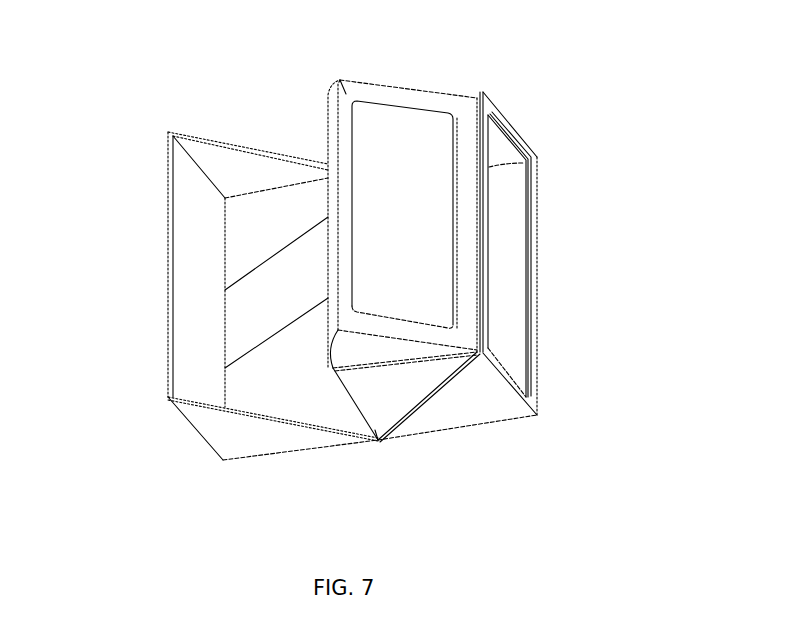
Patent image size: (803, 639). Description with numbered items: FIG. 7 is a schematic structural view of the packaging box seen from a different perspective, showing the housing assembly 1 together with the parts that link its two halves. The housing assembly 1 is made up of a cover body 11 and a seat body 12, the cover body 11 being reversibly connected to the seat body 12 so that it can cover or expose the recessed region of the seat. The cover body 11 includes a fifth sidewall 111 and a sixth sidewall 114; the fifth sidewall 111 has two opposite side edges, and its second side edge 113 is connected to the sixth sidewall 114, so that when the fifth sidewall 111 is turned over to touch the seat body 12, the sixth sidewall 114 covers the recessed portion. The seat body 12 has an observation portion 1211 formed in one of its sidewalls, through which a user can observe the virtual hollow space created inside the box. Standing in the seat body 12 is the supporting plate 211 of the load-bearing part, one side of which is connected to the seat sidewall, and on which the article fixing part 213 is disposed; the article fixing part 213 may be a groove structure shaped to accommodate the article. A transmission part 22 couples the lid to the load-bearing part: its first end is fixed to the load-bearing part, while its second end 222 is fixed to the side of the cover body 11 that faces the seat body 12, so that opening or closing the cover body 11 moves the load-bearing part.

The housing assembly 1 is at (457, 509).
The cover body 11 is at (283, 440).
The fifth sidewall 111 is at (272, 398).
The second side edge 113 is at (228, 402).
The sixth sidewall 114 is at (185, 226).
The seat body 12 is at (467, 418).
The observation portion 1211 is at (520, 196).
The supporting plate 211 is at (340, 80).
The article fixing part 213 is at (417, 138).
The transmission part 22 is at (263, 306).
The second end 222 is at (233, 292).